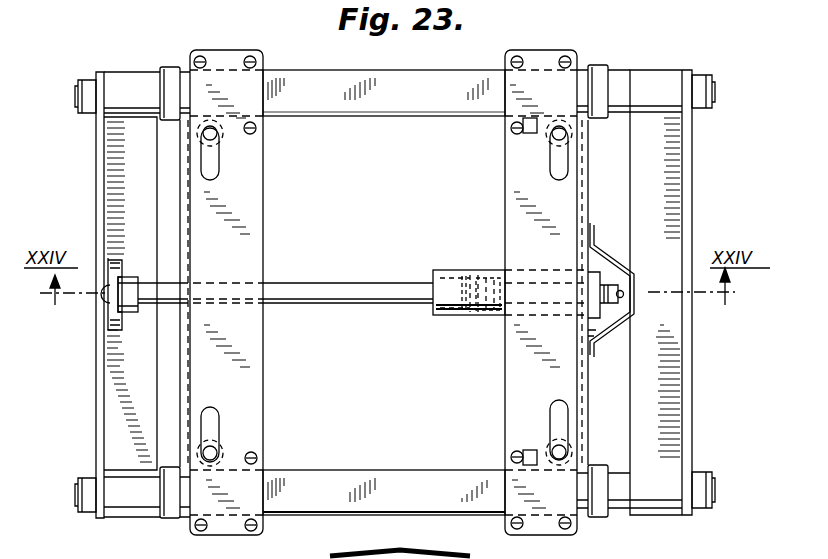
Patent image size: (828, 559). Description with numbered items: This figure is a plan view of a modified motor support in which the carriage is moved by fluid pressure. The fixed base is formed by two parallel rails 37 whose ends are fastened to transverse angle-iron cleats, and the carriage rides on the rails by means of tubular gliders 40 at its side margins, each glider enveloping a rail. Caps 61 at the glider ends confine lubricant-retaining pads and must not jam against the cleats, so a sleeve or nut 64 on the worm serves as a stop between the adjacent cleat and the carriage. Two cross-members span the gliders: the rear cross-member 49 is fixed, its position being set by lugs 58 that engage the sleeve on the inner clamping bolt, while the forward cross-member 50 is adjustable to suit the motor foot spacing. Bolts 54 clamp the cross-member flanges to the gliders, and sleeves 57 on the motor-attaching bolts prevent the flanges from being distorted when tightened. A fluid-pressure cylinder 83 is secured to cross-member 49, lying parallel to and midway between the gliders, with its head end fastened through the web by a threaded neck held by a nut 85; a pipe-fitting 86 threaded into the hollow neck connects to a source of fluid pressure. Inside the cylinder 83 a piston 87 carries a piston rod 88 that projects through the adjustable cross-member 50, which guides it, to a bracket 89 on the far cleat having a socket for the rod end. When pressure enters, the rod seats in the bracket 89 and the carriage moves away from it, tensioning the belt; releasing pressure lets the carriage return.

The rail 37 is at (620, 80).
The glider 40 is at (340, 118).
The cross-member 49 is at (505, 184).
The cross-member 50 is at (265, 214).
The bolt 54 is at (256, 132).
The sleeve 57 is at (218, 160).
The lug 58 is at (528, 135).
The cap 61 is at (173, 72).
The sleeve or nut 64 is at (130, 322).
The fluid-pressure cylinder 83 is at (488, 270).
The nut 85 is at (608, 325).
The pipe-fitting 86 is at (614, 280).
The piston 87 is at (472, 318).
The piston rod 88 is at (375, 304).
The bracket 89 is at (122, 266).